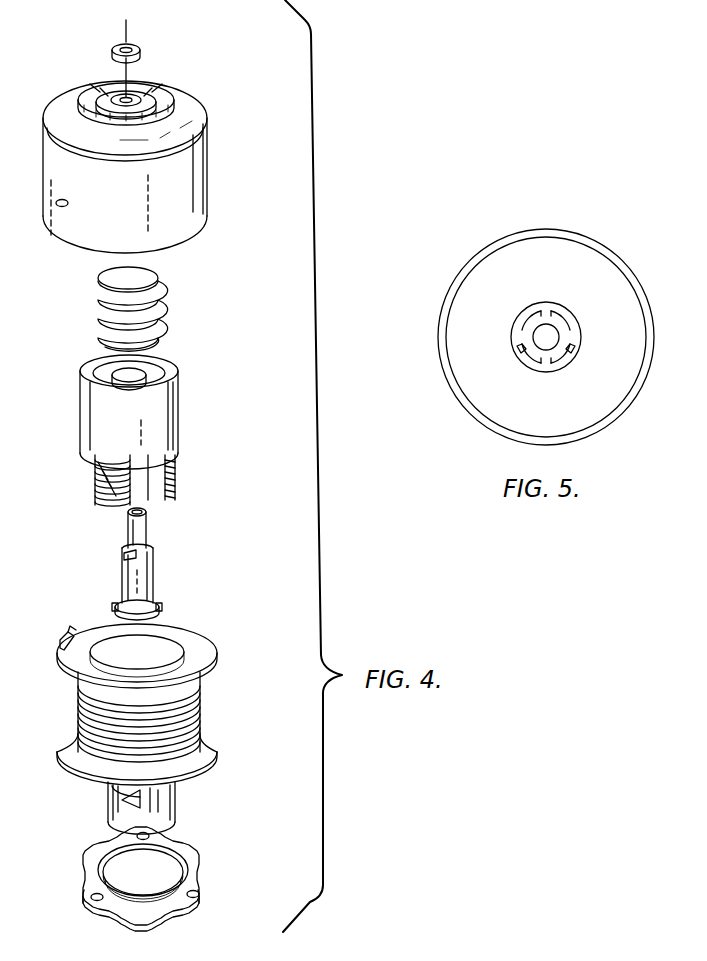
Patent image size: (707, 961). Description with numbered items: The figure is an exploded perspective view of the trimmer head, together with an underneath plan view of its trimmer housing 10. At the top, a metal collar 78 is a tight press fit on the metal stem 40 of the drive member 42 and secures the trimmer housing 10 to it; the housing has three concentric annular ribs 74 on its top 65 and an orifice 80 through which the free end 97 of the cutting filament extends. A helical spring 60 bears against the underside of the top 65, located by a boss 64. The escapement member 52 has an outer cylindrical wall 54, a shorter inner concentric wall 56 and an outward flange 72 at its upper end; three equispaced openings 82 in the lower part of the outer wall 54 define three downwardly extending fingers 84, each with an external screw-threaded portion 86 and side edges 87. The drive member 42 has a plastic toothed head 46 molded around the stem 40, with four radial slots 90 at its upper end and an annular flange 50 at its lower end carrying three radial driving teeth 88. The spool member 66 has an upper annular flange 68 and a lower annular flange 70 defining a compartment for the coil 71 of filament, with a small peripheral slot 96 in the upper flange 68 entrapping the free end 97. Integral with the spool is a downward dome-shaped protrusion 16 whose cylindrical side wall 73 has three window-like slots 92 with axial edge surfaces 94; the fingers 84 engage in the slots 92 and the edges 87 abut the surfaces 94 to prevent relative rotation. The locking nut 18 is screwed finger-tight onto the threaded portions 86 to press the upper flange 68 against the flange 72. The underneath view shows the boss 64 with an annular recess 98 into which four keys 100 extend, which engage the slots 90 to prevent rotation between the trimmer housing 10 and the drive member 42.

In FIG. 4, the trimmer housing 10 is at (210, 205).
In FIG. 5, the trimmer housing 10 is at (462, 268).
In FIG. 4, the dome-shaped protrusion 16 is at (163, 806).
In FIG. 4, the locking nut 18 is at (213, 882).
In FIG. 4, the metal stem 40 is at (148, 530).
In FIG. 4, the drive member 42 is at (150, 564).
In FIG. 4, the plastic toothed head 46 is at (132, 568).
In FIG. 4, the annular flange 50 is at (140, 707).
In FIG. 4, the escapement member 52 is at (144, 412).
In FIG. 4, the outer cylindrical wall 54 is at (88, 440).
In FIG. 4, the inner concentric cylindrical wall 56 is at (112, 392).
In FIG. 4, the helical spring 60 is at (155, 315).
In FIG. 5, the boss 64 is at (520, 320).
In FIG. 4, the top 65 is at (178, 135).
In FIG. 4, the spool member 66 is at (69, 699).
In FIG. 4, the upper annular flange 68 is at (200, 668).
In FIG. 4, the lower annular flange 70 is at (72, 757).
In FIG. 4, the coil of cutting filament 71 is at (74, 730).
In FIG. 4, the flange 72 is at (170, 385).
In FIG. 4, the cylindrical side wall 73 is at (112, 818).
In FIG. 4, the concentric annular ribs 74 is at (108, 100).
In FIG. 4, the metal collar 78 is at (143, 55).
In FIG. 4, the orifice 80 is at (64, 208).
In FIG. 4, the openings 82 is at (93, 460).
In FIG. 4, the fingers 84 is at (100, 500).
In FIG. 4, the screw-threaded portion 86 is at (178, 462).
In FIG. 4, the edge 87 is at (150, 492).
In FIG. 4, the driving teeth 88 is at (118, 610).
In FIG. 4, the radial slots 90 is at (140, 556).
In FIG. 4, the window-like slots 92 is at (172, 783).
In FIG. 4, the axial edge surfaces 94 is at (165, 802).
In FIG. 4, the peripheral slot 96 is at (60, 652).
In FIG. 4, the outer free end 97 is at (74, 634).
In FIG. 5, the annular recess 98 is at (560, 322).
In FIG. 5, the keys 100 is at (525, 355).